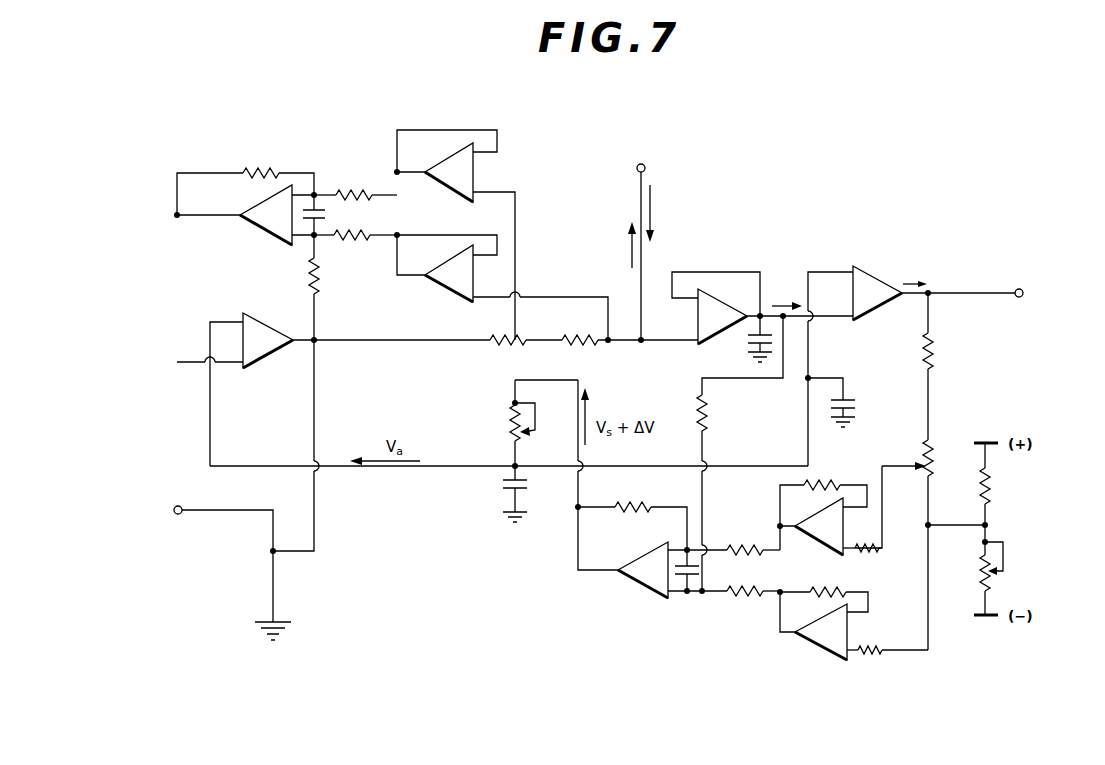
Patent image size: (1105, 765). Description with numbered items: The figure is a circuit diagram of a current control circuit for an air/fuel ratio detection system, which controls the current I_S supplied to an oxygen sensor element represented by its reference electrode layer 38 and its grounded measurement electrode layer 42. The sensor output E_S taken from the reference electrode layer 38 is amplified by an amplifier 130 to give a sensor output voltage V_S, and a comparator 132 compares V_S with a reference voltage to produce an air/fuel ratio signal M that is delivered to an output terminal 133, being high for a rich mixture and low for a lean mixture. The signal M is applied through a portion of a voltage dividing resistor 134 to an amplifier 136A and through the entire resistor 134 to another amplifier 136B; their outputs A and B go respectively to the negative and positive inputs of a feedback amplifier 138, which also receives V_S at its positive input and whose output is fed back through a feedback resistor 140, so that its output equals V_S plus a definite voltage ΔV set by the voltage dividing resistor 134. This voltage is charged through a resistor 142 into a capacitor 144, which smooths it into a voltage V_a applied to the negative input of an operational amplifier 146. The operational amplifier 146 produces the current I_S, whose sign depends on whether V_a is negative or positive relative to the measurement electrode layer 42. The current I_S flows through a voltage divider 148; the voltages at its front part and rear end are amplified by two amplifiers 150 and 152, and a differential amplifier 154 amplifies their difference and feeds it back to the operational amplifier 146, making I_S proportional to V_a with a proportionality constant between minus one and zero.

The reference electrode layer 38 is at (645, 164).
The measurement electrode layer 42 is at (176, 506).
The amplifier 130 is at (698, 302).
The comparator 132 is at (882, 273).
The output terminal 133 is at (1023, 288).
The voltage dividing resistor 134 is at (937, 460).
The amplifier 136A is at (815, 548).
The amplifier 136B is at (822, 655).
The feedback amplifier 138 is at (638, 583).
The feedback resistor 140 is at (632, 512).
The resistor 142 is at (507, 420).
The capacitor 144 is at (505, 490).
The operational amplifier 146 is at (275, 368).
The voltage divider 148 is at (510, 348).
The amplifier 150 is at (477, 167).
The amplifier 152 is at (440, 287).
The differential amplifier 154 is at (253, 225).